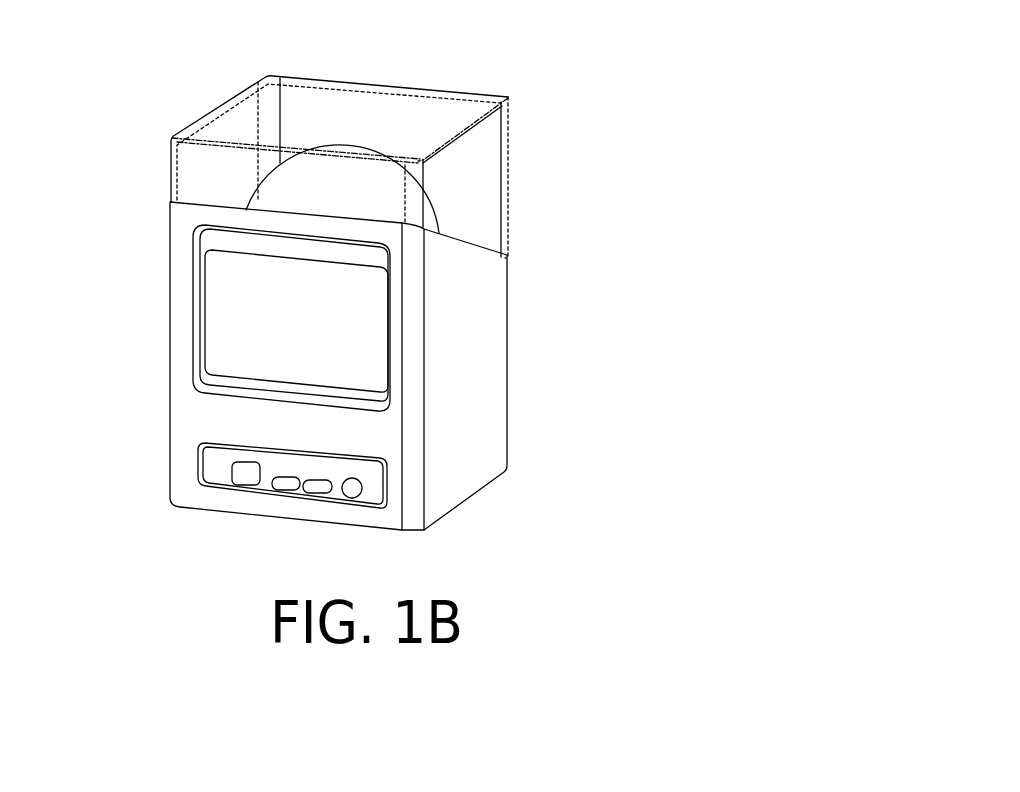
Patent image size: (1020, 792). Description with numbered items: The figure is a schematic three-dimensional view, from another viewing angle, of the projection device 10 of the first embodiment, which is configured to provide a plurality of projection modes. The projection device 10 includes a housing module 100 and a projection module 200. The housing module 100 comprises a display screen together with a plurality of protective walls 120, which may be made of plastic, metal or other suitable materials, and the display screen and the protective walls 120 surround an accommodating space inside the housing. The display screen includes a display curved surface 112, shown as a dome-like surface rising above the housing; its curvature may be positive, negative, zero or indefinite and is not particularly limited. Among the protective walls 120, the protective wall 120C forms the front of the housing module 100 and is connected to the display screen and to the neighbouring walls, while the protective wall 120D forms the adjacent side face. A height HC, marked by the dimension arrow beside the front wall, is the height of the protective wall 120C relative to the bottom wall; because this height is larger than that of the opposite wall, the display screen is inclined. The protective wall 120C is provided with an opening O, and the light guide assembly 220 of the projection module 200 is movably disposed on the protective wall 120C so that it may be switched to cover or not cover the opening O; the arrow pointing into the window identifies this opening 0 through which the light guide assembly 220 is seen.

The housing module 100 is at (572, 200).
The display curved surface 112 is at (387, 197).
The protective walls 120 is at (416, 366).
The protective wall 120C is at (367, 438).
The protective wall 120D is at (457, 425).
The projection module 200 is at (415, 318).
The light guide assembly 220 is at (368, 312).
The opening 0 is at (471, 370).
The opening O is at (372, 348).
The height of protective wall 120C HC is at (172, 202).
The projection device 10 is at (768, 543).